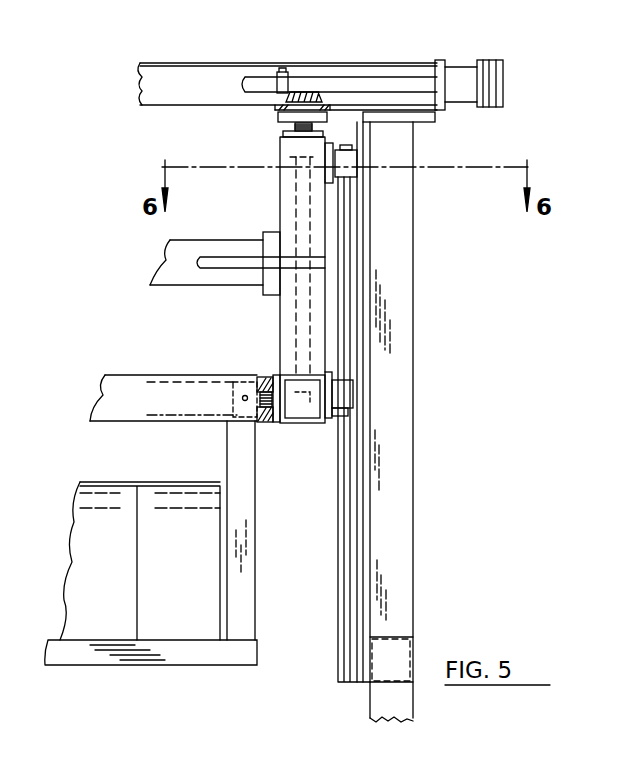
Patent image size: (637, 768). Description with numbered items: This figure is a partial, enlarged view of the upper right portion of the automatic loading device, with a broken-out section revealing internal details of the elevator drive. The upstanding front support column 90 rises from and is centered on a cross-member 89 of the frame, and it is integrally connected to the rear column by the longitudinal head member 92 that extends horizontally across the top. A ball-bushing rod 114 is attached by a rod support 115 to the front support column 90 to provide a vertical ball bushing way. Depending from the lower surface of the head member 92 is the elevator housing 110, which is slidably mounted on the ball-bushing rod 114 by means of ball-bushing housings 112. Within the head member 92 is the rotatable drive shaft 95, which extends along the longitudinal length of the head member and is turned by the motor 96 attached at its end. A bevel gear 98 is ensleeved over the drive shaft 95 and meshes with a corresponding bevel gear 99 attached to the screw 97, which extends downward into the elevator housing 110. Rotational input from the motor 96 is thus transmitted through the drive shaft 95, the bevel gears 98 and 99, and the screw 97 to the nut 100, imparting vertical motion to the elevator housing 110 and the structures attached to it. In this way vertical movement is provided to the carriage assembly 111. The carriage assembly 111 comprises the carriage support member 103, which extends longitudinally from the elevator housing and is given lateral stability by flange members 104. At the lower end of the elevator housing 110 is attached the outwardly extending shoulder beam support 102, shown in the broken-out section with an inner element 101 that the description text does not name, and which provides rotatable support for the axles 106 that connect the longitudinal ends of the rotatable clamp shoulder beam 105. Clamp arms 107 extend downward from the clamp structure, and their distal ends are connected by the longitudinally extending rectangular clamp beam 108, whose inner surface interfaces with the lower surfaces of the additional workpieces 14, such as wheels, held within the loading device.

The workpiece 14 is at (100, 497).
The cross-member 89 is at (388, 635).
The front support column 90 is at (400, 420).
The longitudinal head member 92 is at (190, 71).
The drive shaft 95 is at (407, 82).
The motor 96 is at (463, 68).
The screw 97 is at (293, 123).
The bevel gear 98 is at (287, 73).
The bevel gear 99 is at (318, 91).
The nut 100 is at (280, 150).
The inner block 101 is at (315, 405).
The shoulder beam support 102 is at (300, 425).
The carriage support member 103 is at (183, 243).
The flange member 104 is at (233, 258).
The clamp shoulder beam 105 is at (158, 378).
The axle 106 is at (253, 380).
The clamp arm 107 is at (240, 535).
The clamp beam 108 is at (193, 660).
The elevator housing 110 is at (280, 182).
The carriage assembly 111 is at (102, 370).
The ball-bushing housing 112 is at (348, 163).
The ball-bushing rod 114 is at (343, 232).
The rod support 115 is at (358, 252).